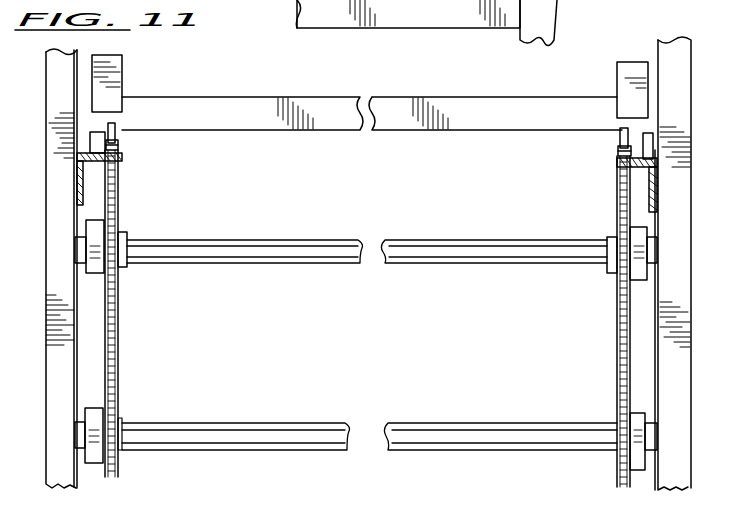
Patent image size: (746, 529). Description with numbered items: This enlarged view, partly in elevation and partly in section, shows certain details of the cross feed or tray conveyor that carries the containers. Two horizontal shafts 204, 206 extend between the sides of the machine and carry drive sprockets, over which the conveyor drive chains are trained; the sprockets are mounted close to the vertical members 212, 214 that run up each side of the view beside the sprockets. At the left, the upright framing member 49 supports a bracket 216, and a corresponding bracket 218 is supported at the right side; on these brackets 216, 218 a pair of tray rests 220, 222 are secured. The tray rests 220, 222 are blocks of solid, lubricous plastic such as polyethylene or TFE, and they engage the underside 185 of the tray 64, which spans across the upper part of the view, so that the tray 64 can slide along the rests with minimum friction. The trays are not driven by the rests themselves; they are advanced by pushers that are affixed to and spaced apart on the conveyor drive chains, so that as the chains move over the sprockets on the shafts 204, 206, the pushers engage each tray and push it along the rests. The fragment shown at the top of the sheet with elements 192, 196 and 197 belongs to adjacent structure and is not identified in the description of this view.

The framing member 49 is at (63, 178).
The tray 64 is at (313, 112).
The underside of tray 185 is at (232, 133).
The frame member 192 is at (377, 13).
The frame member 196 is at (456, 13).
The frame member 197 is at (467, 20).
The shaft 204 is at (238, 262).
The shaft 206 is at (207, 437).
The left chain 212 is at (108, 312).
The right chain 214 is at (623, 314).
The bracket 216 is at (85, 172).
The bracket 218 is at (620, 160).
The tray rest 220 is at (97, 133).
The tray rest 222 is at (645, 133).